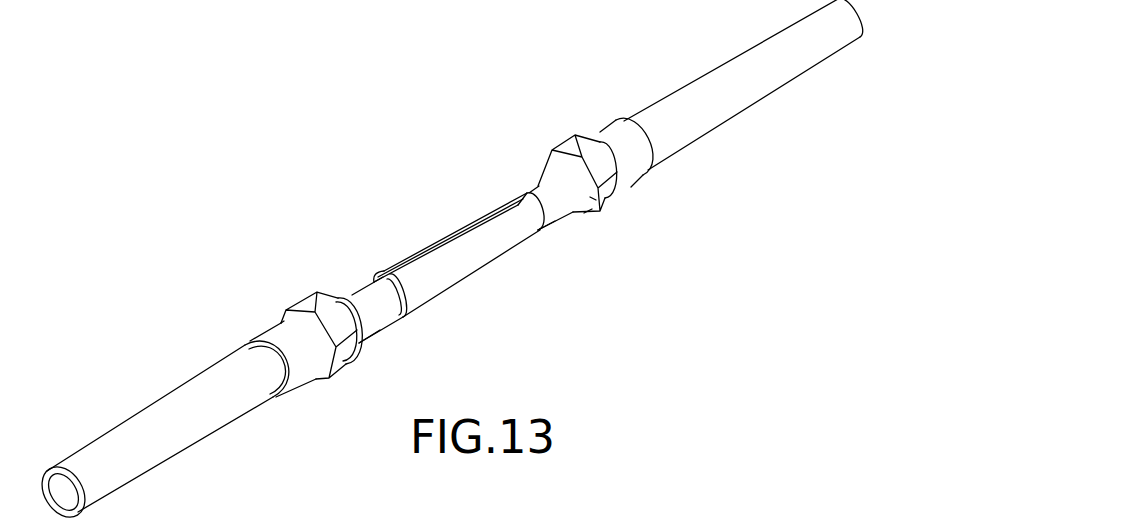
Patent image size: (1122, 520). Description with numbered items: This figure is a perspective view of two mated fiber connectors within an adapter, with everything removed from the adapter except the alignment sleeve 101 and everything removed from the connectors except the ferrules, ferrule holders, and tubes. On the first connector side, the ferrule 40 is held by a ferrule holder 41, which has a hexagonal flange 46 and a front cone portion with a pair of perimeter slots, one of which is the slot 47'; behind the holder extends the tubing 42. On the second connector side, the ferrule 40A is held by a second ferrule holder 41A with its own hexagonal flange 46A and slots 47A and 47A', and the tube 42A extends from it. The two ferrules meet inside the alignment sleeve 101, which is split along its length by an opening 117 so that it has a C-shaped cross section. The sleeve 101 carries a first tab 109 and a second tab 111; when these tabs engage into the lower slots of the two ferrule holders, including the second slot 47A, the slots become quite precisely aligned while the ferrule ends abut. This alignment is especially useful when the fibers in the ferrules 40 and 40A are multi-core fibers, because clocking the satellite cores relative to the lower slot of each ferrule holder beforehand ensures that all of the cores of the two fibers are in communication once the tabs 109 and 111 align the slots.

The ferrule holder 41 is at (279, 296).
The tubing 42 is at (173, 443).
The hexagonal flange 46 is at (343, 362).
The slot 47' is at (296, 305).
The ferrule 40 is at (370, 298).
The first tab 109 is at (383, 328).
The alignment sleeve 101 is at (457, 268).
The opening 117 is at (410, 265).
The ferrule 40A is at (532, 189).
The second tab 111 is at (557, 228).
The hexagonal flange 46A is at (610, 173).
The slot 47A' is at (584, 130).
The second slot 47A is at (614, 243).
The ferrule holder 41A is at (590, 197).
The tube 42A is at (735, 100).